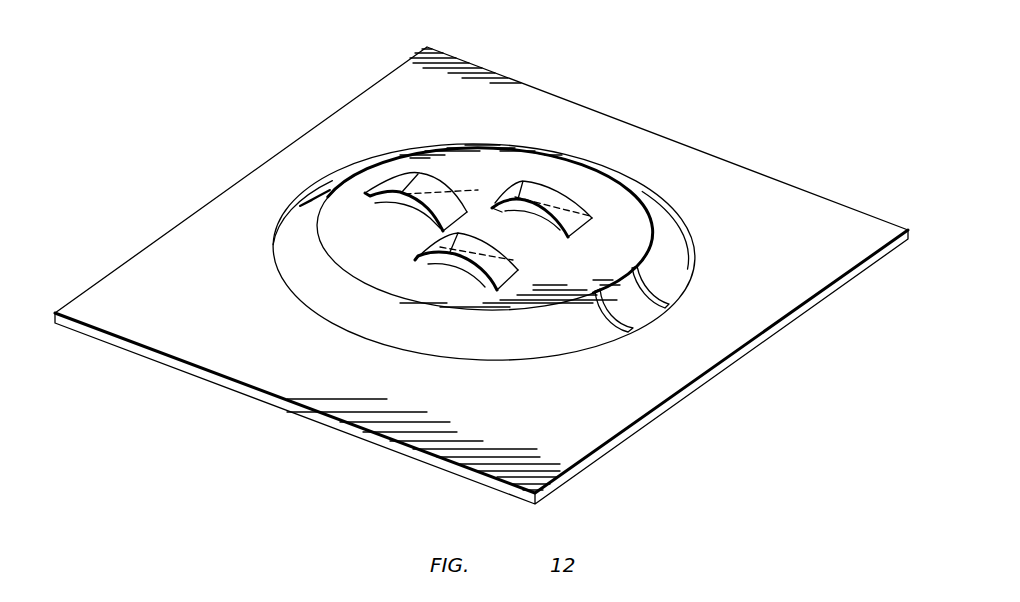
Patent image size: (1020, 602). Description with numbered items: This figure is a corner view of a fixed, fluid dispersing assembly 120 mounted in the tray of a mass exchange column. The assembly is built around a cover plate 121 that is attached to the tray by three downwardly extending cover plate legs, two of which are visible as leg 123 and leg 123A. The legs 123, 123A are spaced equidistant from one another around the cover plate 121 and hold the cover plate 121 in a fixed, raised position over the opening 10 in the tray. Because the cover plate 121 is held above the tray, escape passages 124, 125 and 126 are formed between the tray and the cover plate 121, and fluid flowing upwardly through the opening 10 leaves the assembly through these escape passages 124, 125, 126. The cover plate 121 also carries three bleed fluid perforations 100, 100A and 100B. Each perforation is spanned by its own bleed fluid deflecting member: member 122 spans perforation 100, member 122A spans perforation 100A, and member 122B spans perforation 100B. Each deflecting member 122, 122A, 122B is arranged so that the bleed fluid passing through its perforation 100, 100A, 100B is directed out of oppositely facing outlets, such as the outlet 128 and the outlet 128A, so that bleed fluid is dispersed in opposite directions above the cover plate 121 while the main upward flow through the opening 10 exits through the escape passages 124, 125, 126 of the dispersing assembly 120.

The opening 10 is at (572, 336).
The bleed fluid perforation 100 is at (530, 226).
The bleed fluid perforation 100A is at (450, 266).
The bleed fluid perforation 100B is at (390, 212).
The fixed fluid dispersing assembly 120 is at (696, 217).
The cover plate 121 is at (500, 141).
The bleed fluid deflecting member 122 is at (543, 190).
The bleed fluid deflecting member 122A is at (499, 292).
The bleed fluid deflecting member 122B is at (428, 178).
The cover plate leg 123 is at (635, 298).
The cover plate leg 123A is at (333, 178).
The escape passage 124 is at (670, 264).
The escape passage 125 is at (300, 280).
The escape passage 126 is at (358, 172).
The outlet 128 is at (384, 209).
The outlet 128A is at (497, 208).